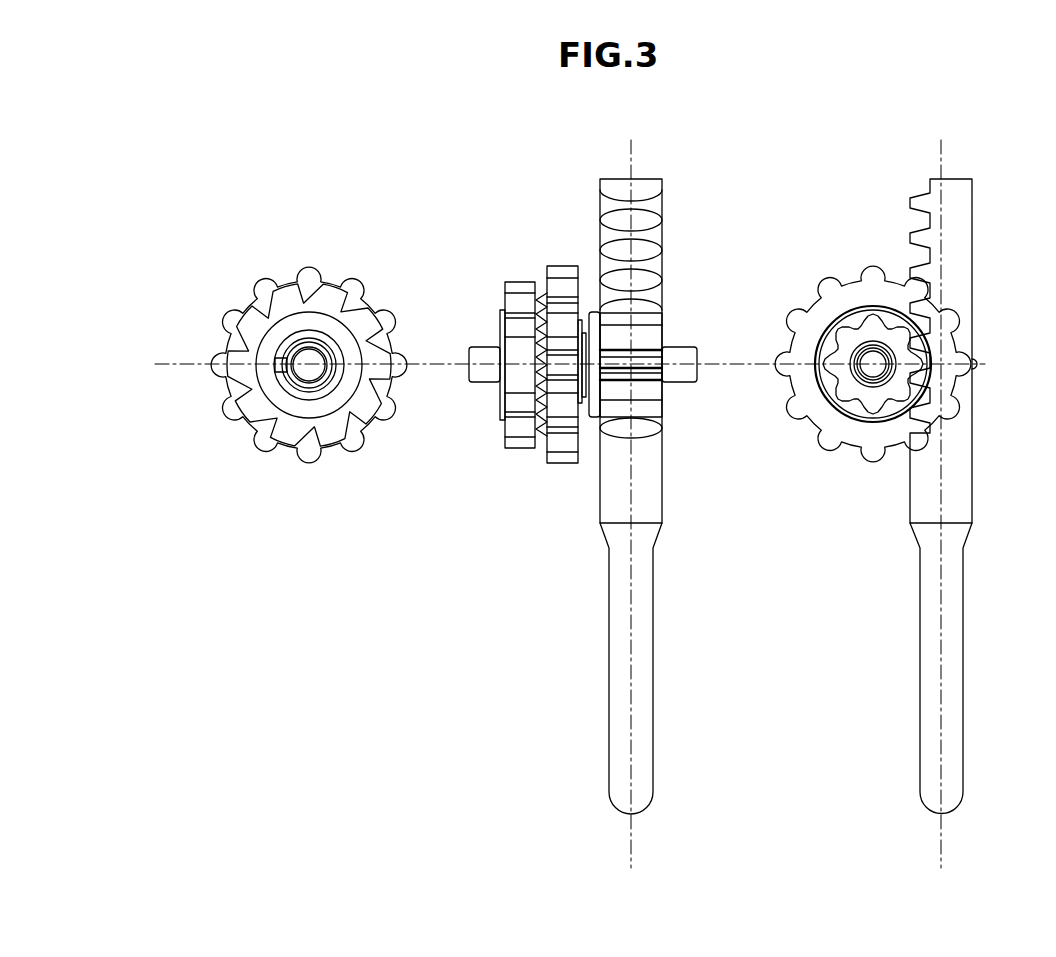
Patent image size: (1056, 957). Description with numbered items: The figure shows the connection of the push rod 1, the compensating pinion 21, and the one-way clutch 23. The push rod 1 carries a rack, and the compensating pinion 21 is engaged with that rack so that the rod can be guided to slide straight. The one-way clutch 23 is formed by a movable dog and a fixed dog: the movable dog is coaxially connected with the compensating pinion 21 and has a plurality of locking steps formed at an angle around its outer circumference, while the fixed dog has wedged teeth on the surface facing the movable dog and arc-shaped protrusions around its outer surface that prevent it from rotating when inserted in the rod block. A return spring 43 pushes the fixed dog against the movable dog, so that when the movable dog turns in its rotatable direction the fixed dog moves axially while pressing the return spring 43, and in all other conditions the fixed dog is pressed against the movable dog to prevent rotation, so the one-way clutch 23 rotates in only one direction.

The push rod 1 is at (570, 513).
The compensating pinion 21 is at (650, 321).
The one-way clutch 23 is at (520, 386).
The return spring 43 is at (586, 400).